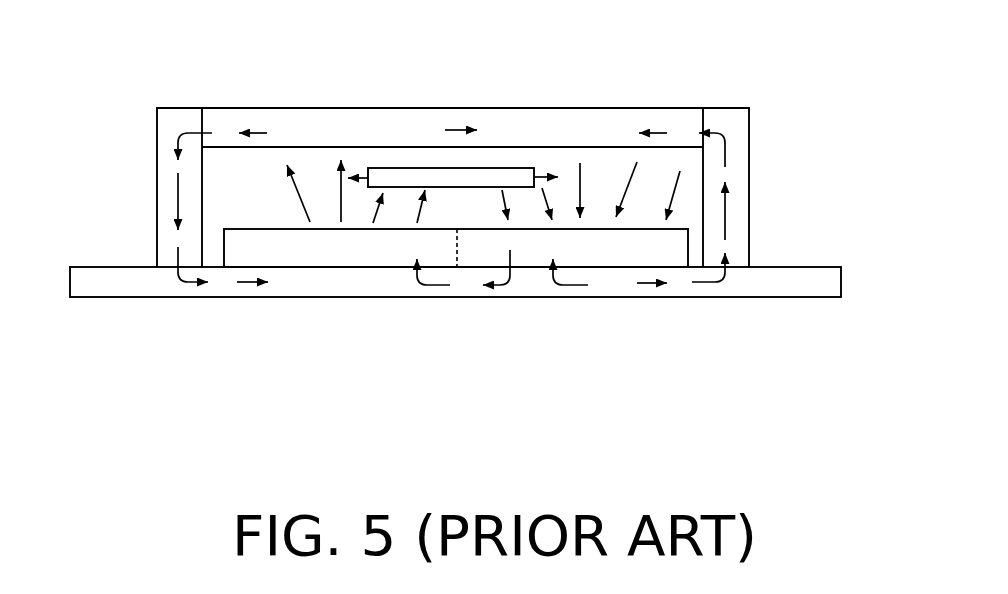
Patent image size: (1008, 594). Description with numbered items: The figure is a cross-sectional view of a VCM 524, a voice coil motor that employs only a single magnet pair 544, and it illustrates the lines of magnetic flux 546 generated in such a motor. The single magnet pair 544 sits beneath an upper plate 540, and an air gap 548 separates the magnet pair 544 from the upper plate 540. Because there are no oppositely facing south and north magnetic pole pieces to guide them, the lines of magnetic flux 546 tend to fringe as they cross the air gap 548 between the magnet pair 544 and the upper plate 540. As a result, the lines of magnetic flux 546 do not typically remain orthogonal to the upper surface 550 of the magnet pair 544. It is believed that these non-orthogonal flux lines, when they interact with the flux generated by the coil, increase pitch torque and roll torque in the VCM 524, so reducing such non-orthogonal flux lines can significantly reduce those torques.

The VCM 524 is at (735, 364).
The upper plate 540 is at (590, 133).
The single magnet pair 544 is at (312, 289).
The lines of magnetic flux 546 is at (178, 195).
The air gap 548 is at (706, 205).
The upper surface 550 is at (521, 229).